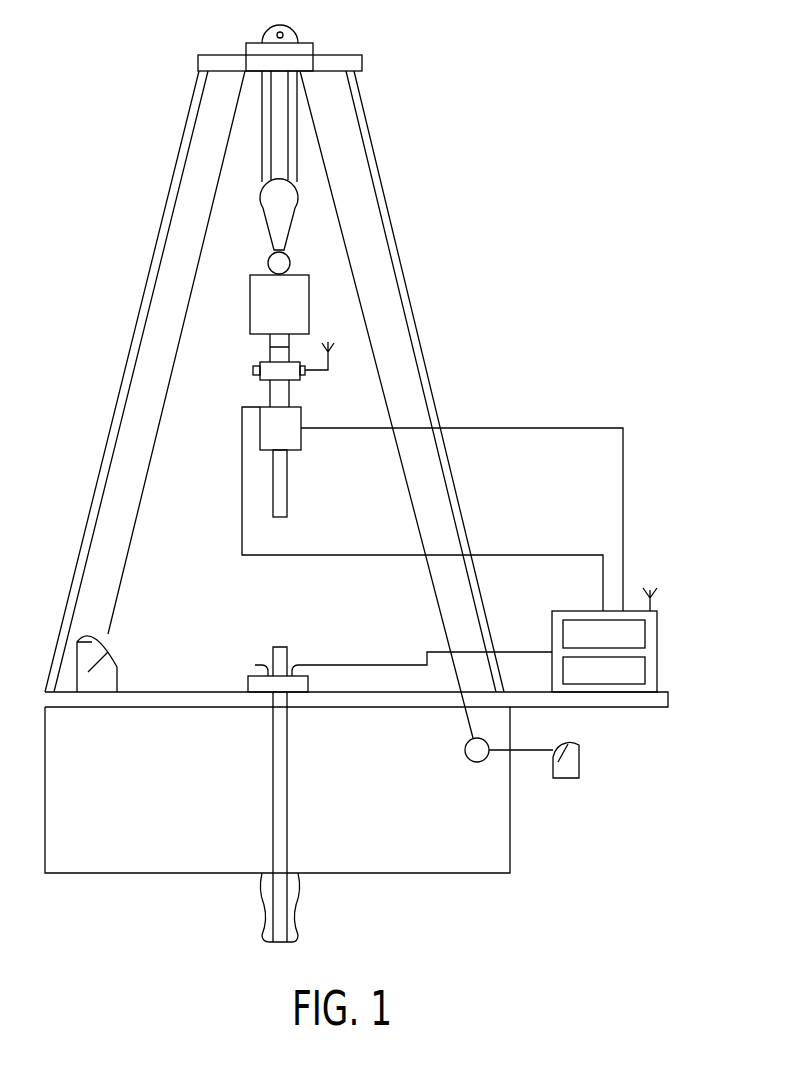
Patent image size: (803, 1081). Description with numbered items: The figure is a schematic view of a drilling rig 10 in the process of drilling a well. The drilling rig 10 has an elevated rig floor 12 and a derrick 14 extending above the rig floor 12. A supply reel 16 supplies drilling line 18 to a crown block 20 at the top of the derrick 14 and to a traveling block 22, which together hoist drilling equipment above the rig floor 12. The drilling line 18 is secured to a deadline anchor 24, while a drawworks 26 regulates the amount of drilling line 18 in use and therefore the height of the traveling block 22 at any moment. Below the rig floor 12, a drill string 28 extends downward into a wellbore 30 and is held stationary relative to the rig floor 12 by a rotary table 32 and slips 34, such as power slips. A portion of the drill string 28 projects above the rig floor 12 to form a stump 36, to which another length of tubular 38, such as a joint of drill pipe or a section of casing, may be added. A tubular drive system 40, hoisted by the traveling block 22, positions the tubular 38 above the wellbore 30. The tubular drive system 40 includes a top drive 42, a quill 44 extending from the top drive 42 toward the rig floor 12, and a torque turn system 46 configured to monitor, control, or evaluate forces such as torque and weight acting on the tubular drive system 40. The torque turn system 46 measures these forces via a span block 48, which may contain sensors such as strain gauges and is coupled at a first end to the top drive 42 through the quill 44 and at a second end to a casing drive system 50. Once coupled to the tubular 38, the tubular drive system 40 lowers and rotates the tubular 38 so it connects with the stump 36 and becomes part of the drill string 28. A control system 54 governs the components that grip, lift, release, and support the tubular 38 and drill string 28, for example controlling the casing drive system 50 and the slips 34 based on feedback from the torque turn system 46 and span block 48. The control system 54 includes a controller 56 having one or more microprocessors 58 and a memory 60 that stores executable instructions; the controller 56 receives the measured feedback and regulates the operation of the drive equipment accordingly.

The drilling rig 10 is at (462, 83).
The rig floor 12 is at (152, 700).
The derrick 14 is at (437, 394).
The supply reel 16 is at (564, 778).
The drilling line 18 is at (175, 370).
The crown block 20 is at (272, 28).
The traveling block 22 is at (293, 228).
The deadline anchor 24 is at (477, 762).
The drawworks 26 is at (98, 657).
The drill string 28 is at (289, 815).
The wellbore 30 is at (295, 932).
The rotary table 32 is at (248, 683).
The slips 34 is at (298, 660).
The stump 36 is at (280, 645).
The tubular 38 is at (281, 480).
The tubular drive system 40 is at (331, 391).
The top drive 42 is at (309, 303).
The quill 44 is at (270, 338).
The torque turn system 46 is at (348, 357).
The span block 48 is at (262, 384).
The casing drive system 50 is at (267, 432).
The control system 54 is at (645, 512).
The controller 56 is at (613, 638).
The microprocessor 58 is at (645, 634).
The memory 60 is at (645, 670).